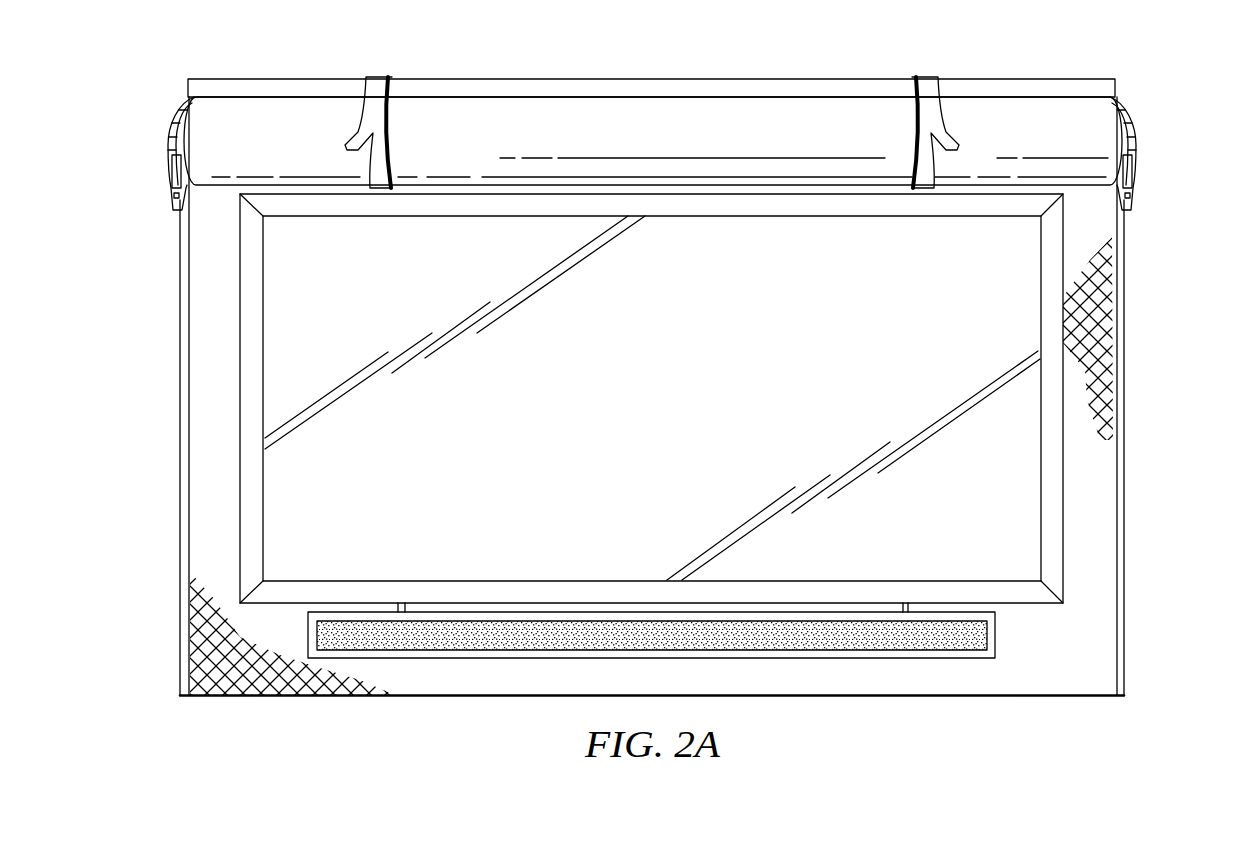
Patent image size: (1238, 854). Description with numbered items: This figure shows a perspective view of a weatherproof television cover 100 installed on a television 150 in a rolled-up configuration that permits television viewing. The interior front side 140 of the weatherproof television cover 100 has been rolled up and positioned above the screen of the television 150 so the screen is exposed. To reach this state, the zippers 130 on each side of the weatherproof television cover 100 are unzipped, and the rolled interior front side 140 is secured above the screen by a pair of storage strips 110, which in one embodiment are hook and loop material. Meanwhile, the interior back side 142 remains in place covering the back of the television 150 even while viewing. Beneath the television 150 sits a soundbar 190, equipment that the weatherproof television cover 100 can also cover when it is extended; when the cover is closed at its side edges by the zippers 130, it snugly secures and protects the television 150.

The weatherproof television cover 100 is at (532, 80).
The storage strips 110 is at (378, 93).
The zippers 130 is at (169, 150).
The interior front side 140 is at (699, 122).
The interior back side 142 is at (216, 426).
The television 150 is at (664, 414).
The soundbar 190 is at (735, 658).